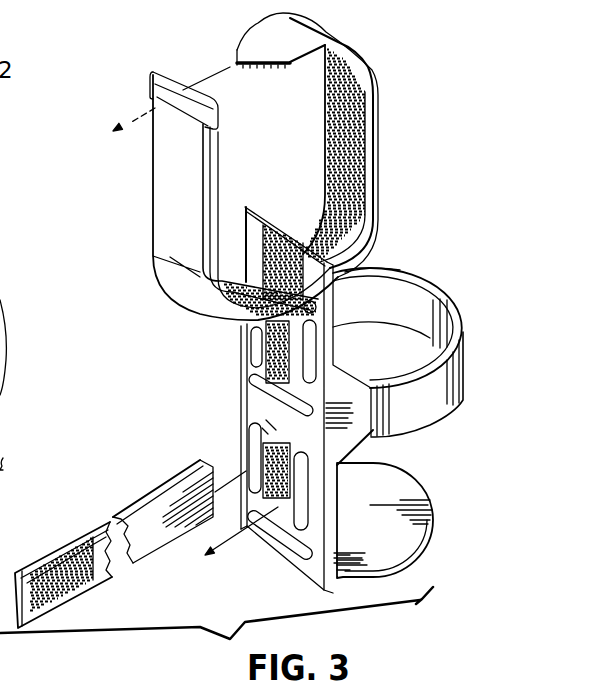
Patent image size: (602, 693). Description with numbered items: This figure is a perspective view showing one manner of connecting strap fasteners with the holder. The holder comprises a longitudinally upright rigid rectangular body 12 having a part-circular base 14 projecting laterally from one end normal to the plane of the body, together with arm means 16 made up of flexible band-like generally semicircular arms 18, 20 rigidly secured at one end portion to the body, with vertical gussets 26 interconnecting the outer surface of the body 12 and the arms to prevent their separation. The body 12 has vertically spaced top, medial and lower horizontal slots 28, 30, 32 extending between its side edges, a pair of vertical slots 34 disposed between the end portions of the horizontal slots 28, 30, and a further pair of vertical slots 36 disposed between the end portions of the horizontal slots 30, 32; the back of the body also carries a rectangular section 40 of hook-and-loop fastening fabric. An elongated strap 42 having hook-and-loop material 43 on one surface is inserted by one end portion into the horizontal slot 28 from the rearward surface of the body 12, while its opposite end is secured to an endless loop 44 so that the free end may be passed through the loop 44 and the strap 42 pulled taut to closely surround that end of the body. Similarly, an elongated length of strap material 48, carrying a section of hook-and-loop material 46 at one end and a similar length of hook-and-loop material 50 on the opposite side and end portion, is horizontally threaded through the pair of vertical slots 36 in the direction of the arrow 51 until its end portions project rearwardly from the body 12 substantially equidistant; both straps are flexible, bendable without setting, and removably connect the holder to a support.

The rigid rectangular body 12 is at (245, 207).
The part-circular base 14 is at (411, 475).
The arm means 16 is at (401, 272).
The semicircular arm 18 is at (424, 279).
The semicircular arm 20 is at (450, 403).
The vertical gussets 26 is at (357, 368).
The top horizontal slot 28 is at (333, 325).
The medial horizontal slot 30 is at (254, 393).
The lower horizontal slot 32 is at (276, 556).
The pair of vertical slots 34 is at (245, 333).
The pair of vertical slots 36 is at (268, 417).
The section of fastening fabric 40 is at (247, 361).
The elongated strap 42 is at (260, 36).
The hook-and-loop material 43 is at (325, 171).
The endless loop 44 is at (173, 72).
The section of hook-and-loop material 46 is at (157, 490).
The strap material 48 is at (128, 579).
The length of hook-and-loop material 50 is at (62, 597).
The arrow 51 is at (226, 548).